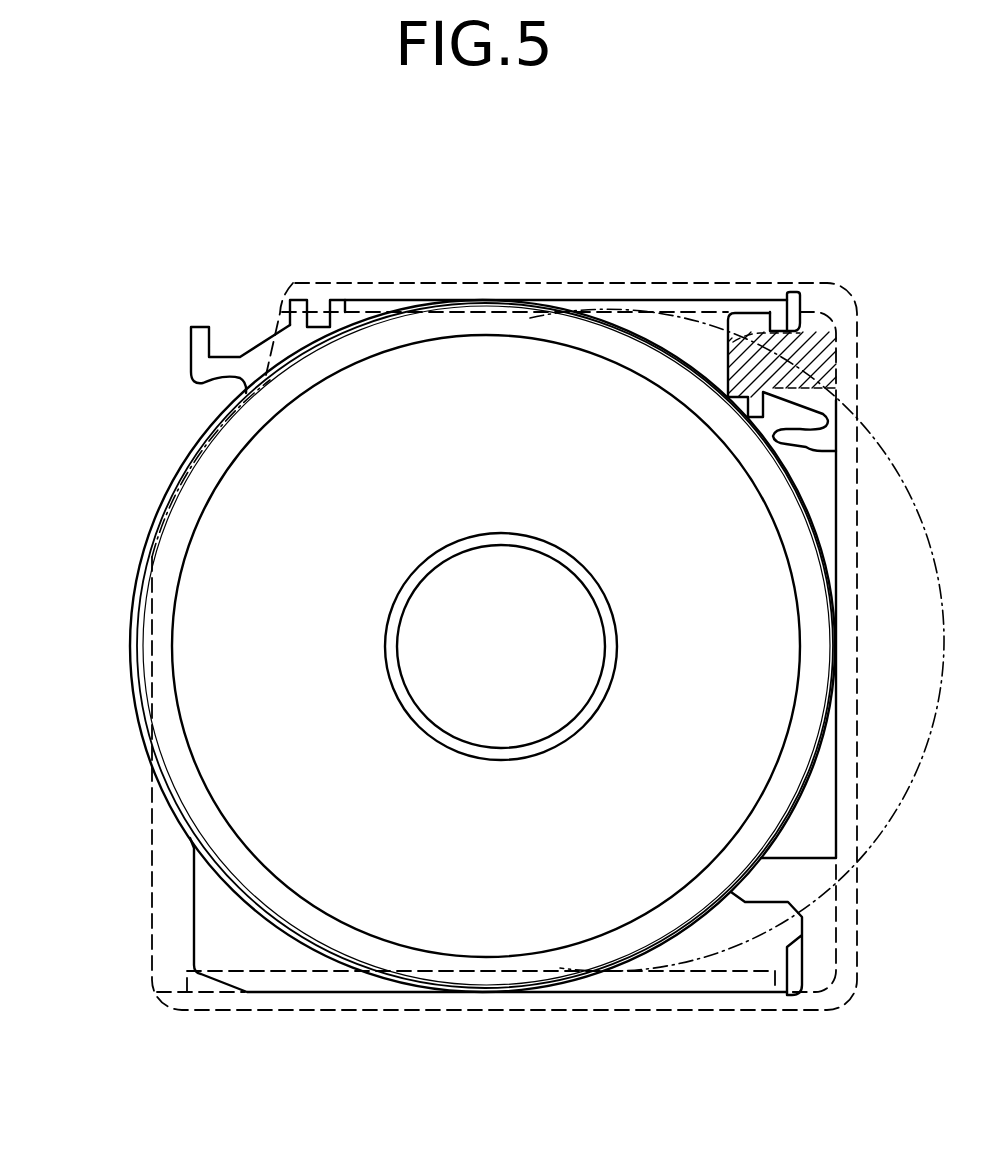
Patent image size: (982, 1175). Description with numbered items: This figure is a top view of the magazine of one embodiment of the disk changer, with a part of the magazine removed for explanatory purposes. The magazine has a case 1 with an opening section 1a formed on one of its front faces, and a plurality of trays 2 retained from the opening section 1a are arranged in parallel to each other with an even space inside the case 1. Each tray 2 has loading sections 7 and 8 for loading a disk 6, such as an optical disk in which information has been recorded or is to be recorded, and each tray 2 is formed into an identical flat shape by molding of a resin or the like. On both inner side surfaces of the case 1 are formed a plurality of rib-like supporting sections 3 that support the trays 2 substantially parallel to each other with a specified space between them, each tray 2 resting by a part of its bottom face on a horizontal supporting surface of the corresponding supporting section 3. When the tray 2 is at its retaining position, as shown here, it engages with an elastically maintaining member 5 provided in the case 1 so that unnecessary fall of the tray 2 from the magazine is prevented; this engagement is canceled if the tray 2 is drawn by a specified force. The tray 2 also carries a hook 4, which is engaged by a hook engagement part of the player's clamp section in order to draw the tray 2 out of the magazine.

The case 1 is at (500, 1010).
The opening section 1a is at (158, 508).
The tray 2 is at (213, 918).
The supporting section 3 is at (273, 973).
The hook 4 is at (202, 335).
The elastically maintaining member 5 is at (750, 317).
The disk 6 is at (140, 650).
The loading section 7 is at (540, 556).
The loading section 8 is at (565, 327).